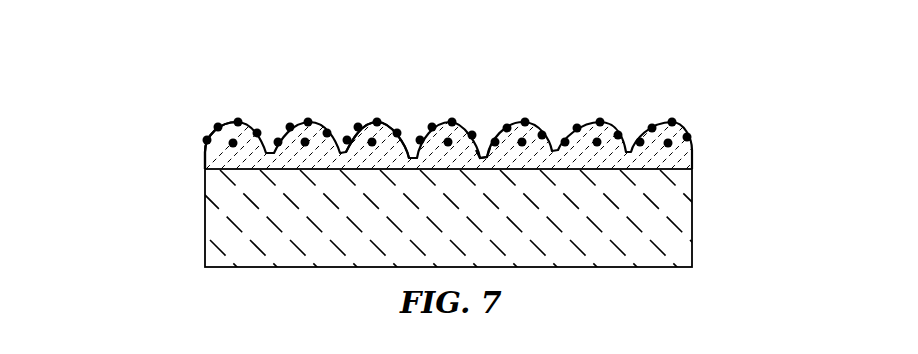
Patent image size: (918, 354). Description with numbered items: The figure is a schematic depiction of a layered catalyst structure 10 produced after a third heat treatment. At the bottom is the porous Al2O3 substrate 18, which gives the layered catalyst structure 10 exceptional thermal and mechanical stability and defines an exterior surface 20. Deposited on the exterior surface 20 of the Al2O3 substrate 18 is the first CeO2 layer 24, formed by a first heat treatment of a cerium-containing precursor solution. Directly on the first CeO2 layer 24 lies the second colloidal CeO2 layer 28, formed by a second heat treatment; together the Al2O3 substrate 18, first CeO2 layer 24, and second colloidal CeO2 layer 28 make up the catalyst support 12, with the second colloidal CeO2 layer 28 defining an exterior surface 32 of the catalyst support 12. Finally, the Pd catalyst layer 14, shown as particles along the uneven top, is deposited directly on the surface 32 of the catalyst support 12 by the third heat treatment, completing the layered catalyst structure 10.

The layered catalyst structure 10 is at (155, 103).
The catalyst support 12 is at (695, 152).
The Pd catalyst layer 14 is at (620, 70).
The Al2O3 substrate 18 is at (205, 224).
The exterior surface 20 is at (213, 140).
The first CeO2 layer 24 is at (485, 150).
The second colloidal CeO2 layer 28 is at (388, 130).
The exterior surface 32 is at (660, 120).